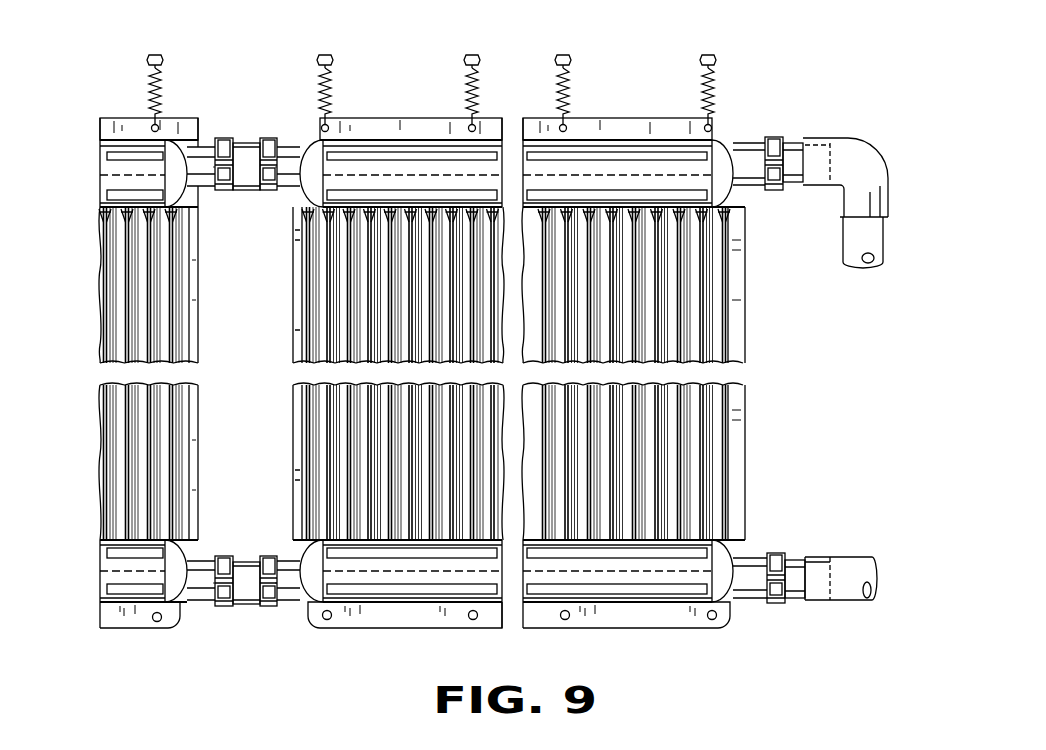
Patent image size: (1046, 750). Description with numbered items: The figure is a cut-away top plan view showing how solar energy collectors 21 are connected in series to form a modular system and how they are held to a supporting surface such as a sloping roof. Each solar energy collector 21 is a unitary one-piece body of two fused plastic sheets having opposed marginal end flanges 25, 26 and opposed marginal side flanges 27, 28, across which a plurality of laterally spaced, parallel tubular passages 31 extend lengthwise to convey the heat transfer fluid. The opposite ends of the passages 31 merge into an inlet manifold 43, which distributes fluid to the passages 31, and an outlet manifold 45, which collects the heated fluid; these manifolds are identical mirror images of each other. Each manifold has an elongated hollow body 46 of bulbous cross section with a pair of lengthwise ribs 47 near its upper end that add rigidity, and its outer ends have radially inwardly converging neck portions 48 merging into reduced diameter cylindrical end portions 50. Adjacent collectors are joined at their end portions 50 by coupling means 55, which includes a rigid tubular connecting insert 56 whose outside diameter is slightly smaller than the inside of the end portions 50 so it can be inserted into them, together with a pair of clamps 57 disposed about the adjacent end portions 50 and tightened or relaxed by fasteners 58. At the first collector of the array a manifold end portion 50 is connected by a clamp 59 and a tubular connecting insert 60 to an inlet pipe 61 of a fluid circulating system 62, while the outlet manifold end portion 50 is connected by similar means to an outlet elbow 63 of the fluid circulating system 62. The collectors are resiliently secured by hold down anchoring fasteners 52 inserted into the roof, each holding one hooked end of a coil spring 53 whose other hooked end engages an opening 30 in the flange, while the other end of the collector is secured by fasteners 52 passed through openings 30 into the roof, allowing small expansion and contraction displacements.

The solar energy collector 21 is at (90, 118).
The marginal end flange 25 is at (368, 622).
The marginal end flange 26 is at (105, 127).
The marginal side flange 27 is at (295, 412).
The marginal side flange 28 is at (190, 337).
The opening 30 is at (162, 127).
The tubular passage 31 is at (127, 308).
The inlet manifold 43 is at (632, 612).
The outlet manifold 45 is at (348, 135).
The hollow body 46 is at (135, 178).
The rib 47 is at (107, 195).
The neck portion 48 is at (313, 157).
The end portion 50 is at (198, 160).
The hold down anchoring fastener 52 is at (157, 54).
The coil spring 53 is at (150, 95).
The coupling means 55 is at (238, 112).
The tubular connecting insert 56 is at (245, 143).
The clamp 57 is at (222, 138).
The fastener 58 is at (226, 175).
The clamp 59 is at (773, 138).
The tubular connecting insert 60 is at (797, 143).
The inlet pipe 61 is at (852, 565).
The fluid circulating system 62 is at (905, 250).
The outlet elbow 63 is at (870, 157).